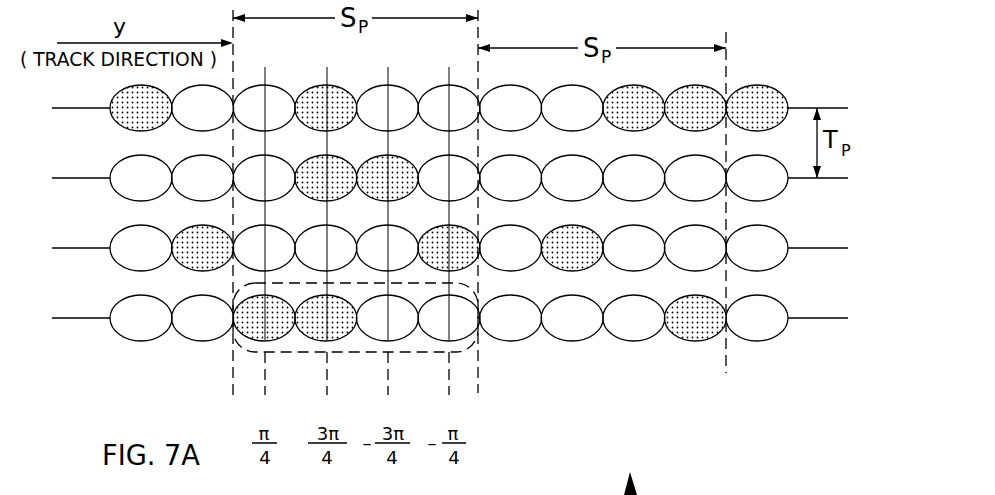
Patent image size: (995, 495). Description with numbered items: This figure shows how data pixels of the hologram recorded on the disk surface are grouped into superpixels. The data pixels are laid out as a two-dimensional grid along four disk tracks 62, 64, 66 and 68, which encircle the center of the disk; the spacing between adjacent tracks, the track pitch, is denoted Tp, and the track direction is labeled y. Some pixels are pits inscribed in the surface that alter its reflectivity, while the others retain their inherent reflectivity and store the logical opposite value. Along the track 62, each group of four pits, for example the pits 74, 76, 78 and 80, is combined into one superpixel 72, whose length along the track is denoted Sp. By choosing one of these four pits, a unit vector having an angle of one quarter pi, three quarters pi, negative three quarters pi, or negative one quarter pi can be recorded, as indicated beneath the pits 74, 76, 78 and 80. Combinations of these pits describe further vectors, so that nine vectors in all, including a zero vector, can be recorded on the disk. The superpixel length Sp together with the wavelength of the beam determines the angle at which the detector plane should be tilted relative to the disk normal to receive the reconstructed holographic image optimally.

The disk track 62 is at (450, 361).
The disk track 64 is at (98, 248).
The disk track 66 is at (98, 178).
The disk track 68 is at (98, 108).
The superpixel 72 is at (286, 358).
The pit 74 is at (250, 334).
The pit 76 is at (343, 337).
The pit 78 is at (398, 338).
The pit 80 is at (468, 338).